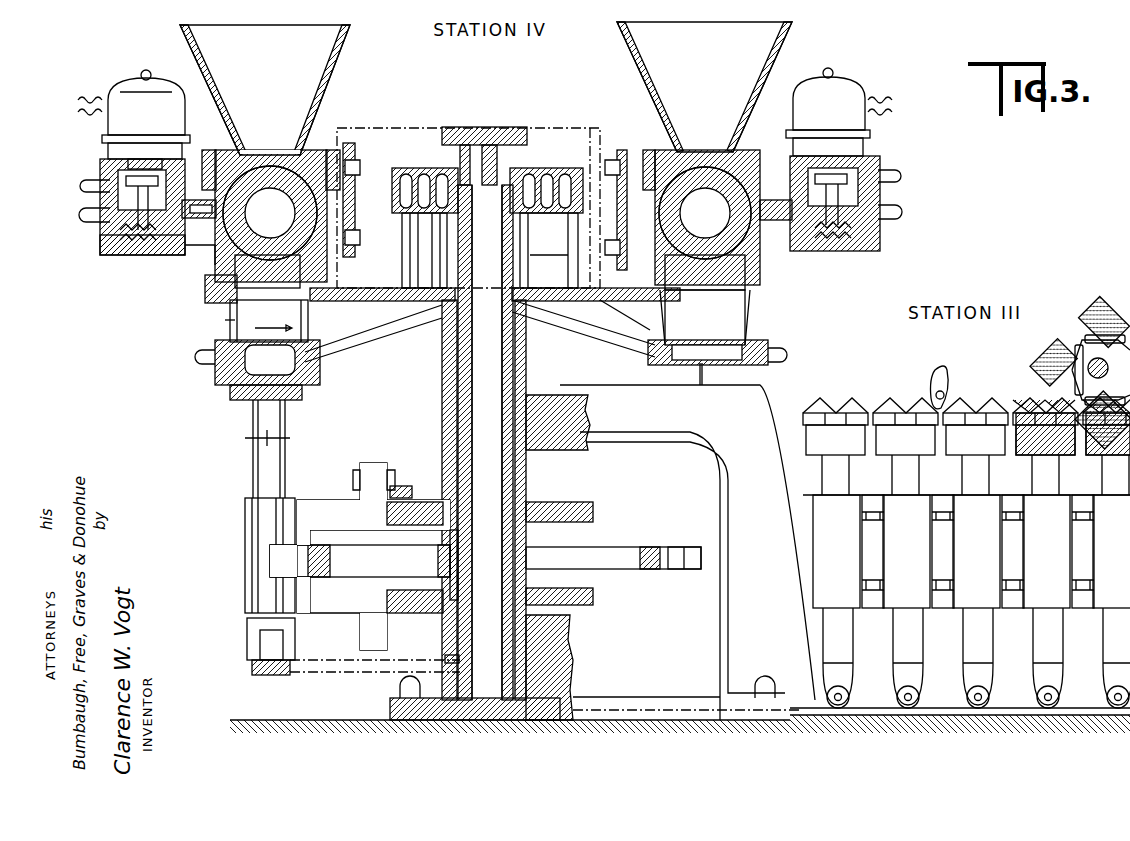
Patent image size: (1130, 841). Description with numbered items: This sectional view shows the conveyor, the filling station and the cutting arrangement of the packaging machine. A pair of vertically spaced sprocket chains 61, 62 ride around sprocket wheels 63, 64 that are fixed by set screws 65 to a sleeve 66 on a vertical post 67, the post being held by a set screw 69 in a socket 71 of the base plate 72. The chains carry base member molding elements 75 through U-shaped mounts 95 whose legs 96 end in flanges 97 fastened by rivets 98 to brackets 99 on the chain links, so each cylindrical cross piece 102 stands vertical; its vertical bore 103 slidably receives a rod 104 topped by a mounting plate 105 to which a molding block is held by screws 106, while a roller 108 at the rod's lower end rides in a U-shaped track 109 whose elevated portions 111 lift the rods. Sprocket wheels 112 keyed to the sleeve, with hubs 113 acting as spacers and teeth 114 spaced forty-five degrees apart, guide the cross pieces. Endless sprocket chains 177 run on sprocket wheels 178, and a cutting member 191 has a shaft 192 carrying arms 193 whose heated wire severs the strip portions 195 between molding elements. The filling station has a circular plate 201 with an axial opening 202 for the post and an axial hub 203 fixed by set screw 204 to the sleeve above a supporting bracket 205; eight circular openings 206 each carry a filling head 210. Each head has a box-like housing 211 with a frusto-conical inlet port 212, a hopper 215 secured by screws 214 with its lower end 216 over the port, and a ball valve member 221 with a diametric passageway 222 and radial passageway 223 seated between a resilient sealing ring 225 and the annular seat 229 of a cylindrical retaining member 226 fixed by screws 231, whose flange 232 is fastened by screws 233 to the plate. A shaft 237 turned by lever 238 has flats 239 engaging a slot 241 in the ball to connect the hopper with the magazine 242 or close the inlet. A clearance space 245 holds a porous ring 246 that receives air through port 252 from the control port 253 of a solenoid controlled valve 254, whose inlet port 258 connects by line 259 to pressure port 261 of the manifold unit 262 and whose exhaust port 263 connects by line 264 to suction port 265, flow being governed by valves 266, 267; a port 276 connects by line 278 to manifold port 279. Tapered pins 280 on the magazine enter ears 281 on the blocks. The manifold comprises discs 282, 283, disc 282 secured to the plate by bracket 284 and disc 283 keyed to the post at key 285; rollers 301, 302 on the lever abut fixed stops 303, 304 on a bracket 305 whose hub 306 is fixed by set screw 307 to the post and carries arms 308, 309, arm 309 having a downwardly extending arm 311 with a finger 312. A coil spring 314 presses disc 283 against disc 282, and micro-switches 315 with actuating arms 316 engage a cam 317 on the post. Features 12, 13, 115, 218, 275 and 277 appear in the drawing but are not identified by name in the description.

The axis line 12 is at (258, 380).
The direction arrows 13 is at (381, 178).
The sprocket chain 61 is at (410, 500).
The sprocket chain 62 is at (440, 605).
The sprocket wheel 63 is at (580, 502).
The sprocket wheel 64 is at (560, 605).
The set screw 65 is at (545, 480).
The sleeve 66 is at (515, 396).
The vertical post 67 is at (570, 655).
The set screw 69 is at (445, 660).
The socket 71 is at (572, 675).
The base plate 72 is at (666, 697).
The base member molding element 75 is at (800, 432).
The U-shaped mount 95 is at (300, 495).
The leg 96 is at (330, 500).
The flange 97 is at (366, 463).
The rivet 98 is at (395, 480).
The bracket 99 is at (400, 620).
The cross piece 102 is at (245, 550).
The vertical bore 103 is at (245, 525).
The rod 104 is at (252, 466).
The mounting plate 105 is at (300, 410).
The screw 106 is at (230, 410).
The roller 108 is at (247, 637).
The U-shaped track 109 is at (252, 675).
The elevated portion 111 is at (340, 672).
The sprocket wheel 112 is at (645, 548).
The hub 113 is at (540, 548).
The tooth 114 is at (684, 547).
The lever arm 115 is at (321, 566).
The endless sprocket chain 177 is at (1072, 350).
The sprocket wheel 178 is at (1090, 330).
The cutting member 191 is at (932, 372).
The shaft 192 is at (948, 392).
The arm 193 is at (932, 380).
The strip portion 195 is at (1010, 413).
The circular plate 201 is at (612, 345).
The axial opening 202 is at (440, 370).
The axial hub 203 is at (440, 395).
The set screw 204 is at (540, 325).
The supporting bracket 205 is at (755, 400).
The circular opening 206 is at (228, 322).
The filling head 210 is at (785, 76).
The housing 211 is at (330, 140).
The inlet port 212 is at (283, 140).
The screw 214 is at (330, 160).
The hopper 215 is at (352, 26).
The lower end 216 is at (232, 145).
The valve seat 218 is at (252, 160).
The valve member 221 is at (205, 278).
The passageway 222 is at (272, 190).
The radial passageway 223 is at (265, 240).
The sealing ring 225 is at (200, 200).
The retaining member 226 is at (205, 285).
The annular seat 229 is at (340, 270).
The screw 231 is at (402, 245).
The flange 232 is at (208, 300).
The screw 233 is at (338, 285).
The shaft 237 is at (393, 180).
The lever 238 is at (400, 150).
The flat 239 is at (300, 283).
The slot 241 is at (295, 207).
The magazine 242 is at (228, 335).
The clearance space 245 is at (176, 150).
The porous ring 246 is at (350, 150).
The port 252 is at (178, 175).
The control port 253 is at (190, 255).
The solenoid controlled valve 254 is at (132, 85).
The inlet port 258 is at (102, 243).
The line 259 is at (84, 214).
The pressure port 261 is at (402, 225).
The manifold unit 262 is at (560, 150).
The exhaust port 263 is at (102, 172).
The line 264 is at (84, 186).
The suction port 265 is at (488, 235).
The valve 266 is at (870, 232).
The valve 267 is at (888, 175).
The cylinder 275 is at (215, 362).
The port 276 is at (200, 358).
The cylinder housing 277 is at (258, 330).
The line 278 is at (372, 356).
The port 279 is at (510, 220).
The tapered pin 280 is at (305, 385).
The ear 281 is at (220, 380).
The disc 282 is at (545, 285).
The disc 283 is at (573, 174).
The bracket 284 is at (512, 304).
The key 285 is at (425, 174).
The roller 301 is at (343, 140).
The roller 302 is at (678, 273).
The fixed stop 303 is at (345, 130).
The fixed stop 304 is at (625, 315).
The bracket 305 is at (530, 125).
The hub 306 is at (485, 140).
The set screw 307 is at (500, 140).
The arm 308 is at (448, 127).
The arm 309 is at (565, 130).
The downwardly extending arm 311 is at (605, 150).
The finger 312 is at (585, 325).
The coil spring 314 is at (540, 155).
The micro-switch 315 is at (440, 340).
The actuating arm 316 is at (488, 280).
The cam 317 is at (488, 253).